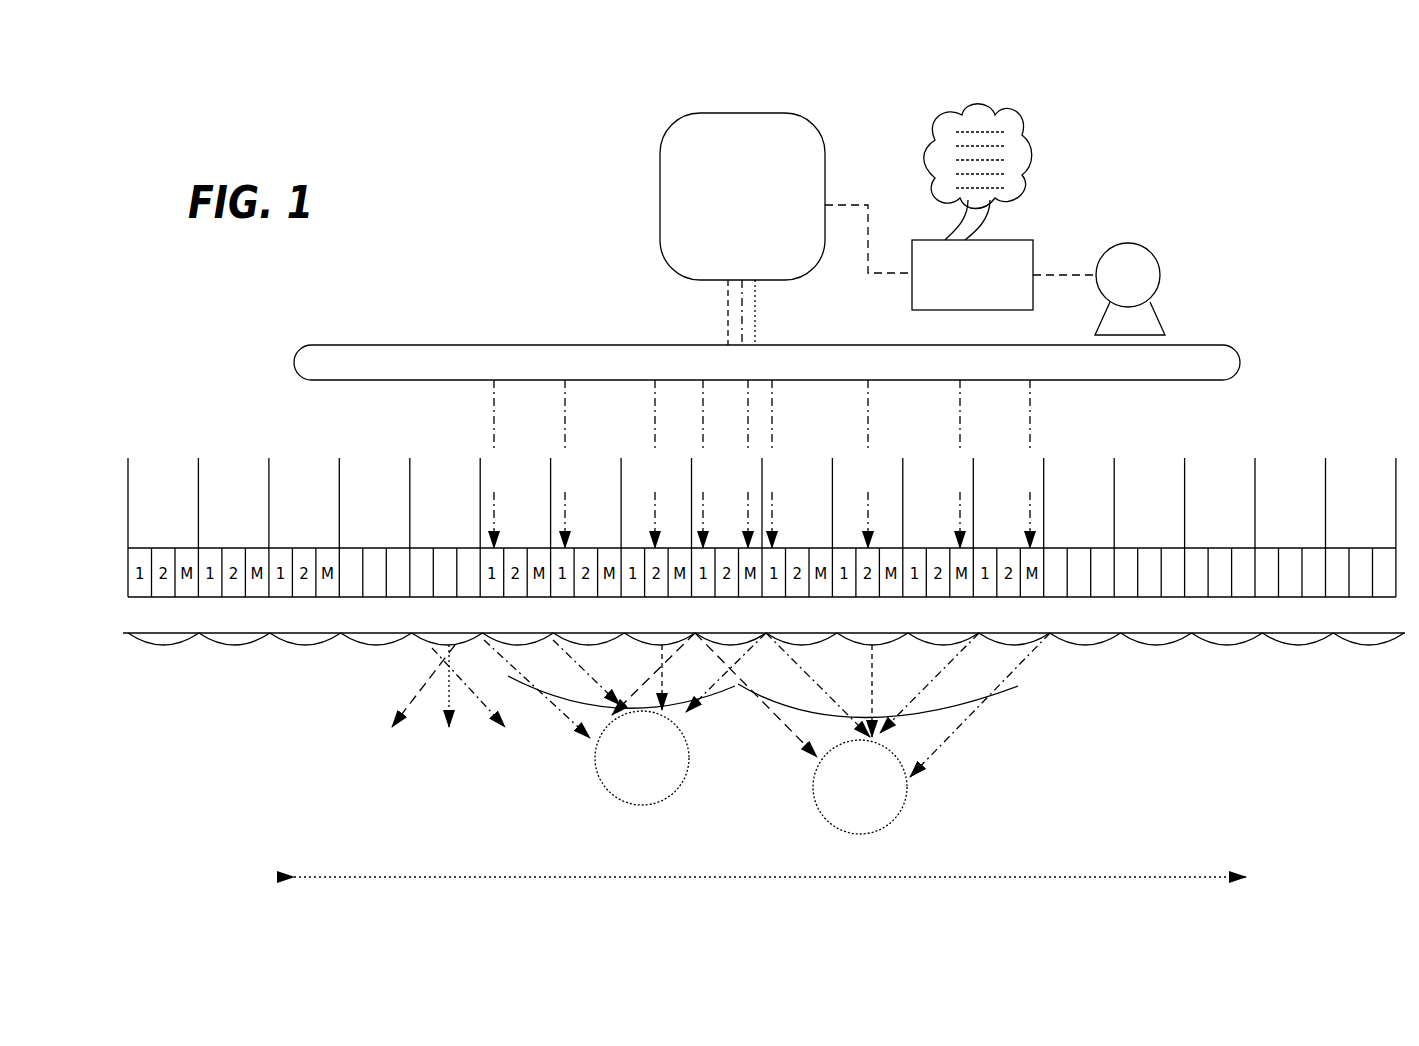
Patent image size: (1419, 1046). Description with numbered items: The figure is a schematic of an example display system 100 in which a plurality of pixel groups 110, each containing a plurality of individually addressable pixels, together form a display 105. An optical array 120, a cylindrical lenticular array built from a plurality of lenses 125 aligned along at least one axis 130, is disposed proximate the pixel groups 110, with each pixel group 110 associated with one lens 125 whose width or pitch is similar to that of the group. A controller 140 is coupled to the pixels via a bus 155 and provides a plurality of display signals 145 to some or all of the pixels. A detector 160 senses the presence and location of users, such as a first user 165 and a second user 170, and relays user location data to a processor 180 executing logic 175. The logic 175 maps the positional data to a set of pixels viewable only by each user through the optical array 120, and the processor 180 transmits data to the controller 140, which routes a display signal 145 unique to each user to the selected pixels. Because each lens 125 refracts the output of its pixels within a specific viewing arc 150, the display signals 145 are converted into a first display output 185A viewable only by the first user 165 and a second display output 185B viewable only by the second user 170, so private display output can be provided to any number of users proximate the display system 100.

The display system 100 is at (1250, 219).
The display 105 is at (125, 542).
The pixel groups 110 is at (762, 527).
The optical array 120 is at (124, 642).
The lenses 125 is at (163, 645).
The axis 130 is at (730, 876).
The controller 140 is at (742, 196).
The display signals 145 is at (742, 280).
The viewing arcs 150 is at (452, 702).
The bus 155 is at (767, 362).
The detector 160 is at (1130, 289).
The first user 165 is at (625, 719).
The second user 170 is at (872, 733).
The logic 175 is at (932, 152).
The processor 180 is at (960, 257).
The first display output 185A is at (724, 694).
The second display output 185B is at (1012, 694).